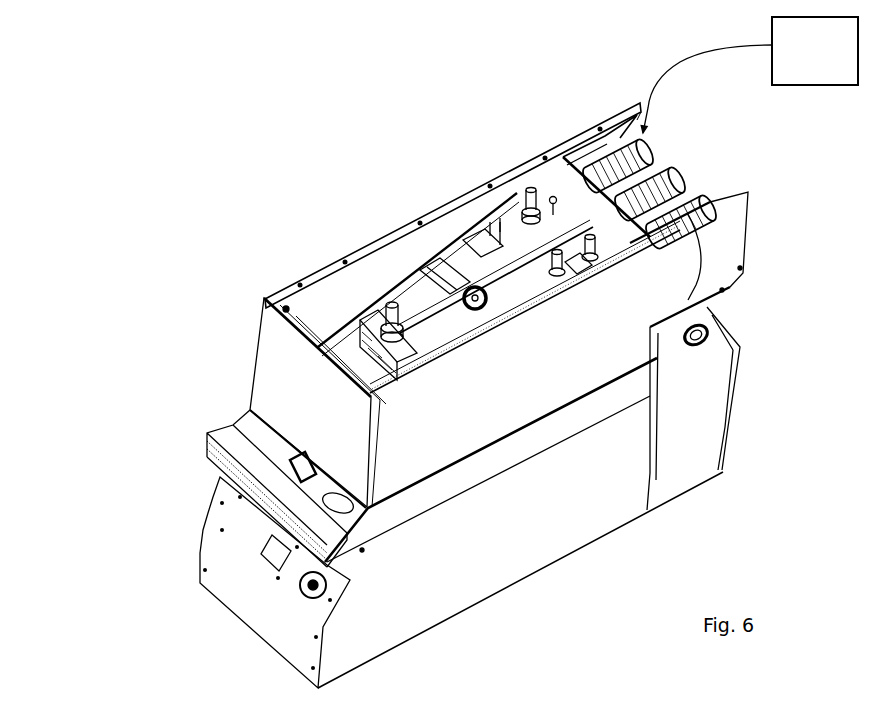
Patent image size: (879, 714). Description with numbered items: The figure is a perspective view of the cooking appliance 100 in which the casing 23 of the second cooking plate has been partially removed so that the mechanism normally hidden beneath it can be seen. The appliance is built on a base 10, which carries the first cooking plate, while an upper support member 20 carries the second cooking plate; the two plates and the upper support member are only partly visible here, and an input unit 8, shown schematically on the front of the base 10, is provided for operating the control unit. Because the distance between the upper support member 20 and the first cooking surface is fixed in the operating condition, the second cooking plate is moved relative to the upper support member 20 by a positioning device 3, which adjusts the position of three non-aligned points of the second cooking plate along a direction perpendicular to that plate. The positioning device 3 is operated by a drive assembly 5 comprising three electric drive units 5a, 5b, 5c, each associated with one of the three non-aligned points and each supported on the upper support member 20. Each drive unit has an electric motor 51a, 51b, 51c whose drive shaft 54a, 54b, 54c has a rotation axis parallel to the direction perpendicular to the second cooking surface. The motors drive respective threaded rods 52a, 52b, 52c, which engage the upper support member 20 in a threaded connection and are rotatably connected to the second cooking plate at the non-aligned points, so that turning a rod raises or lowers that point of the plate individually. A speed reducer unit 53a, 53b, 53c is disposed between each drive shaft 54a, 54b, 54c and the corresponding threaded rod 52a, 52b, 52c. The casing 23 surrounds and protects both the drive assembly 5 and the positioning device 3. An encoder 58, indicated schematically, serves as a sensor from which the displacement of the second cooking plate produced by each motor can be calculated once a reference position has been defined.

The cooking appliance 100 is at (90, 262).
The base 10 is at (543, 547).
The input unit 8 is at (262, 550).
The casing 23 is at (297, 387).
The upper support member 20 is at (375, 268).
The positioning device 3 is at (477, 205).
The drive assembly 5 is at (717, 167).
The electric drive unit 5a is at (715, 190).
The electric drive unit 5b is at (683, 157).
The electric drive unit 5c is at (650, 135).
The electric motor 51a is at (700, 293).
The electric motor 51b is at (744, 255).
The electric motor 51c is at (617, 137).
The threaded rod 52a is at (562, 283).
The threaded rod 52b is at (325, 310).
The threaded rod 52c is at (533, 188).
The speed reducer unit 53a is at (577, 270).
The speed reducer unit 53b is at (398, 360).
The speed reducer unit 53c is at (457, 245).
The drive shaft 54a is at (703, 323).
The drive shaft 54b is at (433, 245).
The drive shaft 54c is at (553, 195).
The encoder 58 is at (749, 75).